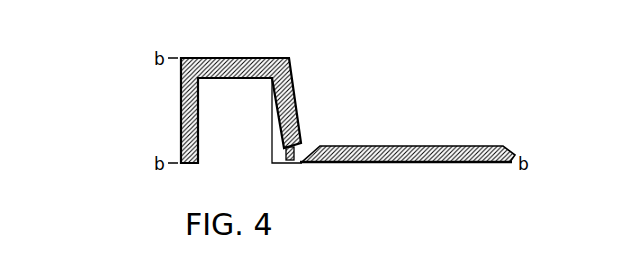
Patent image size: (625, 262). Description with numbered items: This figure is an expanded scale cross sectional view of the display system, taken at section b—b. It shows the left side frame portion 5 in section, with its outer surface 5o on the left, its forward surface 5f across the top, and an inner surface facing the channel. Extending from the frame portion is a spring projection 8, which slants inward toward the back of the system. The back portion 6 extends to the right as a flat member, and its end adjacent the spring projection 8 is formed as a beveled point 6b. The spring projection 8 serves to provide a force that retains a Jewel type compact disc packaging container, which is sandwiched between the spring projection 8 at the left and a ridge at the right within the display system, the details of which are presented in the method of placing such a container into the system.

The left side frame portion 5 is at (183, 50).
The forward surface 5f is at (234, 56).
The outer surface 5o is at (177, 131).
The spring projection 8 is at (306, 111).
The back portion 6 is at (408, 150).
The beveled point 6b is at (298, 154).